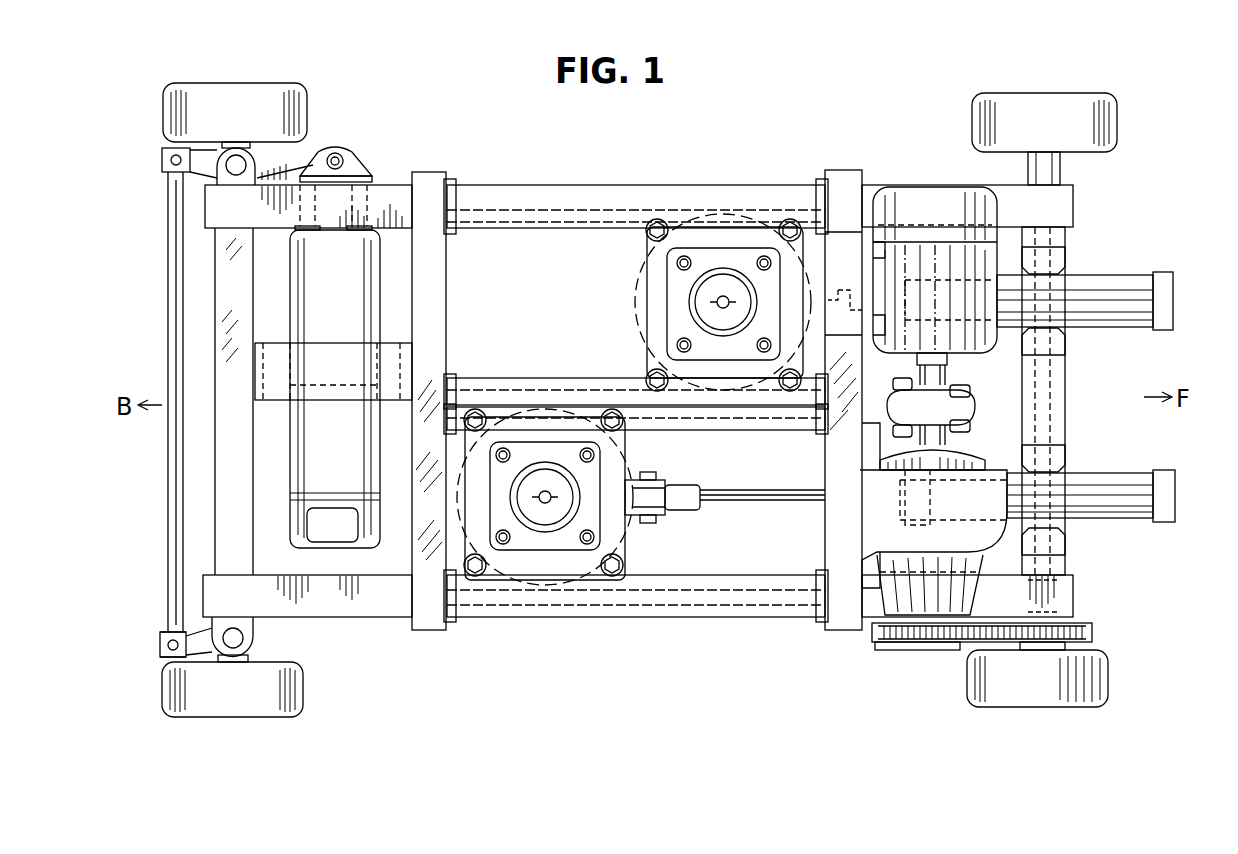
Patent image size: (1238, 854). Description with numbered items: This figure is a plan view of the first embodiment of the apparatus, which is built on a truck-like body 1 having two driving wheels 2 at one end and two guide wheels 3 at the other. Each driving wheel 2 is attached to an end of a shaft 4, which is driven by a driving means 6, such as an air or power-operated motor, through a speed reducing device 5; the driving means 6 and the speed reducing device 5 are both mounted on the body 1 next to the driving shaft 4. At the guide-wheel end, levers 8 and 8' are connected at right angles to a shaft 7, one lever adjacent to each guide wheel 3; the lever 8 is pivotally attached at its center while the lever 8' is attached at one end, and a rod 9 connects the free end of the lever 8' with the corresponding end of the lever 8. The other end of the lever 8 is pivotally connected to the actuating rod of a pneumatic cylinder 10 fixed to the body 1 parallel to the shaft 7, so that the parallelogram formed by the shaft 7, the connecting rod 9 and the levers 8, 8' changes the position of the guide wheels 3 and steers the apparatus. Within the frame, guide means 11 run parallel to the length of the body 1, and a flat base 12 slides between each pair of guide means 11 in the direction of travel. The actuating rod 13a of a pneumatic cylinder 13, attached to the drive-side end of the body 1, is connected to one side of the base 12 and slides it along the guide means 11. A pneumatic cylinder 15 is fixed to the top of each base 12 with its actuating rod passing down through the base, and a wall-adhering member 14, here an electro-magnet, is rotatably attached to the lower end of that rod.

The truck-like body 1 is at (386, 610).
The driving wheel 2 is at (1097, 150).
The guide wheel 3 is at (165, 122).
The shaft 4 is at (1025, 165).
The speed reducing device 5 is at (920, 600).
The driving means 6 is at (907, 185).
The shaft 7 is at (250, 142).
The lever 8 is at (314, 142).
The lever 8' is at (155, 669).
The rod 9 is at (172, 460).
The pneumatic cylinder 10 is at (370, 286).
The guide means 11 is at (707, 190).
The flat base 12 is at (687, 237).
The pneumatic cylinder 13 is at (1158, 318).
The actuating rod 13a is at (760, 492).
The wall-adhering member 14 is at (635, 300).
The pneumatic cylinder 15 is at (740, 258).